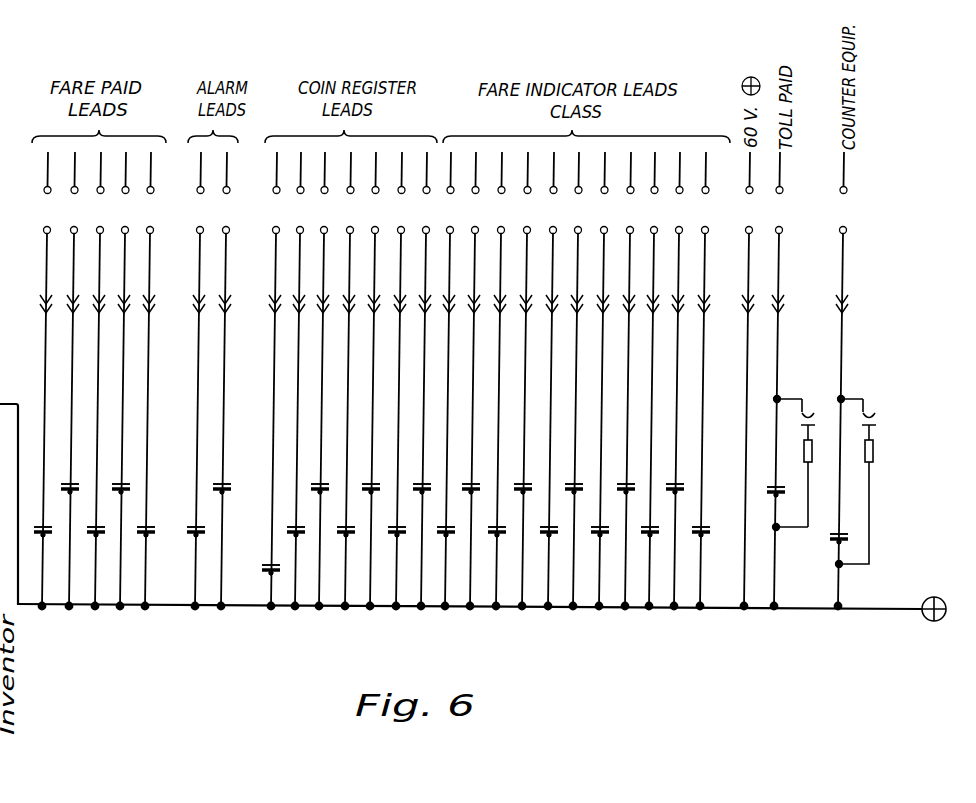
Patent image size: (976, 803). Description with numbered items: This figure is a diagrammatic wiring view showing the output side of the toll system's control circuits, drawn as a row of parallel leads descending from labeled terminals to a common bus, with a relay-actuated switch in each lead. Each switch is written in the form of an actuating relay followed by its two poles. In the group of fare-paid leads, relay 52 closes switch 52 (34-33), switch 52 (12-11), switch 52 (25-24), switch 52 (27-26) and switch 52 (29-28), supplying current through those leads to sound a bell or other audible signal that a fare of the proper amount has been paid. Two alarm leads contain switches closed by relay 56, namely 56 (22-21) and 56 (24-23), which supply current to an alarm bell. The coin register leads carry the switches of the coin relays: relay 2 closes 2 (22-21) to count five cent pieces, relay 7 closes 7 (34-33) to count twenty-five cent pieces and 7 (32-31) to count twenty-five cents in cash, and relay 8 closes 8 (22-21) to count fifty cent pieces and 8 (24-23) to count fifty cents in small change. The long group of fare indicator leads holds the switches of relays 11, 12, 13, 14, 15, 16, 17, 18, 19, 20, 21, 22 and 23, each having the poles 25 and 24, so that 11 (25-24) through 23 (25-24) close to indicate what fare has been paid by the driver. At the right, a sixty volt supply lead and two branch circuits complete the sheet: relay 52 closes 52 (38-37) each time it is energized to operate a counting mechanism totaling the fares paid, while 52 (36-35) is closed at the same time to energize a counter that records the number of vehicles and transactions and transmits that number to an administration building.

The relay 2 is at (264, 567).
The relay 7 is at (303, 507).
The relay 8 is at (354, 507).
The switch pole 11 is at (233, 512).
The switch pole 12 is at (246, 481).
The relay 13 is at (437, 529).
The relay 14 is at (462, 486).
The relay 15 is at (488, 529).
The relay 16 is at (514, 486).
The relay 17 is at (540, 529).
The relay 18 is at (565, 486).
The relay 19 is at (591, 529).
The relay 20 is at (617, 486).
The switch pole 21 is at (423, 553).
The switch pole 22 is at (435, 522).
The switch pole 23 is at (461, 512).
The switch pole 24 is at (407, 508).
The switch pole 25 is at (407, 498).
The switch pole 26 is at (130, 496).
The switch pole 27 is at (130, 477).
The switch pole 28 is at (155, 539).
The switch pole 29 is at (155, 520).
The switch pole 31 is at (329, 496).
The switch pole 32 is at (329, 477).
The switch pole 33 is at (178, 539).
The switch pole 34 is at (178, 520).
The switch pole 35 is at (848, 546).
The switch pole 36 is at (848, 527).
The switch pole 37 is at (785, 499).
The switch pole 38 is at (785, 480).
The relay 52 is at (432, 511).
The relay 56 is at (200, 507).